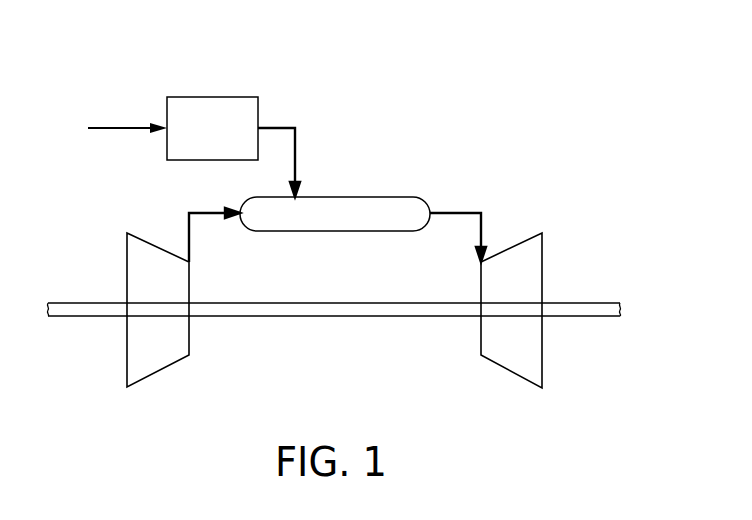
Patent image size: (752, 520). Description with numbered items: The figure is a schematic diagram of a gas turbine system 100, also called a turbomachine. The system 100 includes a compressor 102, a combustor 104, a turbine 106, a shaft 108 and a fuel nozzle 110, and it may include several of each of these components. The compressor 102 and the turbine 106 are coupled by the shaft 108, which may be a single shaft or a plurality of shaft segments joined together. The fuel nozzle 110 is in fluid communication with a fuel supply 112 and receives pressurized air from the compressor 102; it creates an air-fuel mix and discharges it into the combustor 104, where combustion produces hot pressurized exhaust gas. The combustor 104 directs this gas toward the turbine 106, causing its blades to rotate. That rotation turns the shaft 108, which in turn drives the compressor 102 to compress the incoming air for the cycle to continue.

The gas turbine system 100 is at (505, 134).
The compressor 102 is at (127, 260).
The combustor 104 is at (350, 197).
The turbine 106 is at (545, 265).
The shaft 108 is at (335, 316).
The fuel nozzle 110 is at (212, 97).
The fuel supply 112 is at (117, 127).